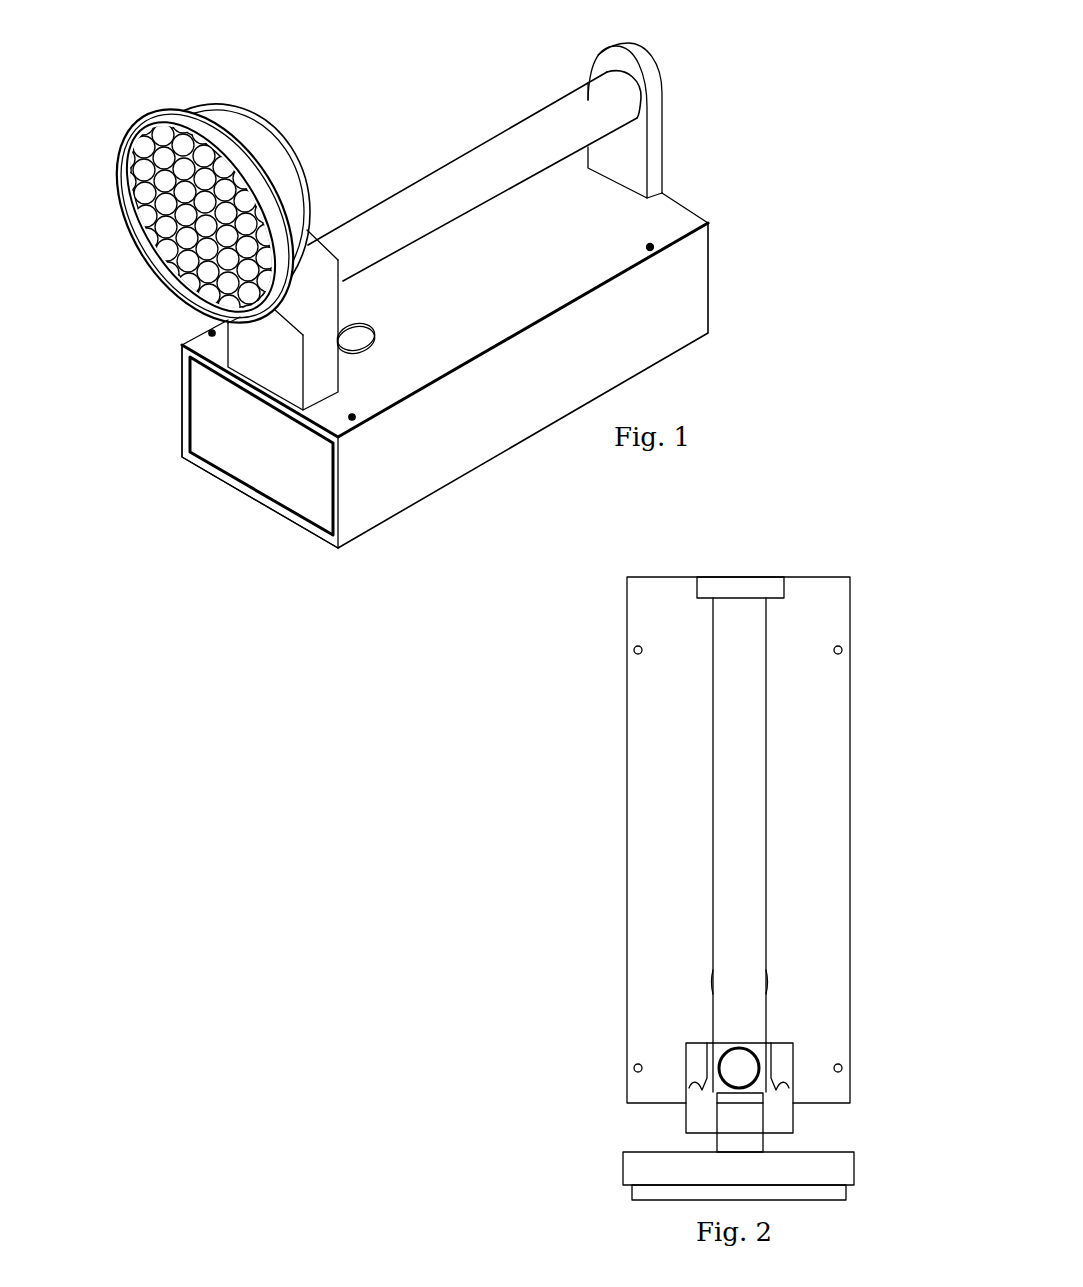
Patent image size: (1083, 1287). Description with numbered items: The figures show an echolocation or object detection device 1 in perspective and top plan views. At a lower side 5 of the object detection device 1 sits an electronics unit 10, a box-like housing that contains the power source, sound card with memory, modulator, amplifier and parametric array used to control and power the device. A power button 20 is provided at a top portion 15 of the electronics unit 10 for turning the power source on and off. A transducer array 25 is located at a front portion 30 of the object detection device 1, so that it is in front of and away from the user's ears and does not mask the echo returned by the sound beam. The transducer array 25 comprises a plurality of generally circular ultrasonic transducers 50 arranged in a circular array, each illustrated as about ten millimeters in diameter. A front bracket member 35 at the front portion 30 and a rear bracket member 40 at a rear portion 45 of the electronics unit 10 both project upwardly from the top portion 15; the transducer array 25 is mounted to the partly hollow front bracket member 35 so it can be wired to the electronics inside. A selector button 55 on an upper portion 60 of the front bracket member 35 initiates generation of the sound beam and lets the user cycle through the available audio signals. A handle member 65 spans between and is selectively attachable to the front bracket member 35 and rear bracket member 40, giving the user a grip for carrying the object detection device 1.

In FIG. 1, the object detection device 1 is at (800, 170).
In FIG. 2, the object detection device 1 is at (887, 559).
In FIG. 1, the lower side 5 is at (416, 527).
In FIG. 1, the electronics unit 10 is at (717, 278).
In FIG. 1, the top portion 15 is at (636, 222).
In FIG. 1, the power button 20 is at (377, 342).
In FIG. 1, the transducer array 25 is at (132, 259).
In FIG. 1, the front portion 30 is at (174, 369).
In FIG. 2, the front portion 30 is at (855, 1197).
In FIG. 1, the front bracket member 35 is at (282, 368).
In FIG. 2, the front bracket member 35 is at (799, 1124).
In FIG. 1, the rear bracket member 40 is at (647, 50).
In FIG. 2, the rear bracket member 40 is at (742, 585).
In FIG. 1, the rear portion 45 is at (754, 332).
In FIG. 2, the rear portion 45 is at (814, 533).
In FIG. 1, the ultrasonic transducers 50 is at (178, 158).
In FIG. 2, the selector button 55 is at (740, 1068).
In FIG. 2, the upper portion 60 is at (705, 1113).
In FIG. 1, the handle member 65 is at (487, 133).
In FIG. 2, the handle member 65 is at (745, 778).